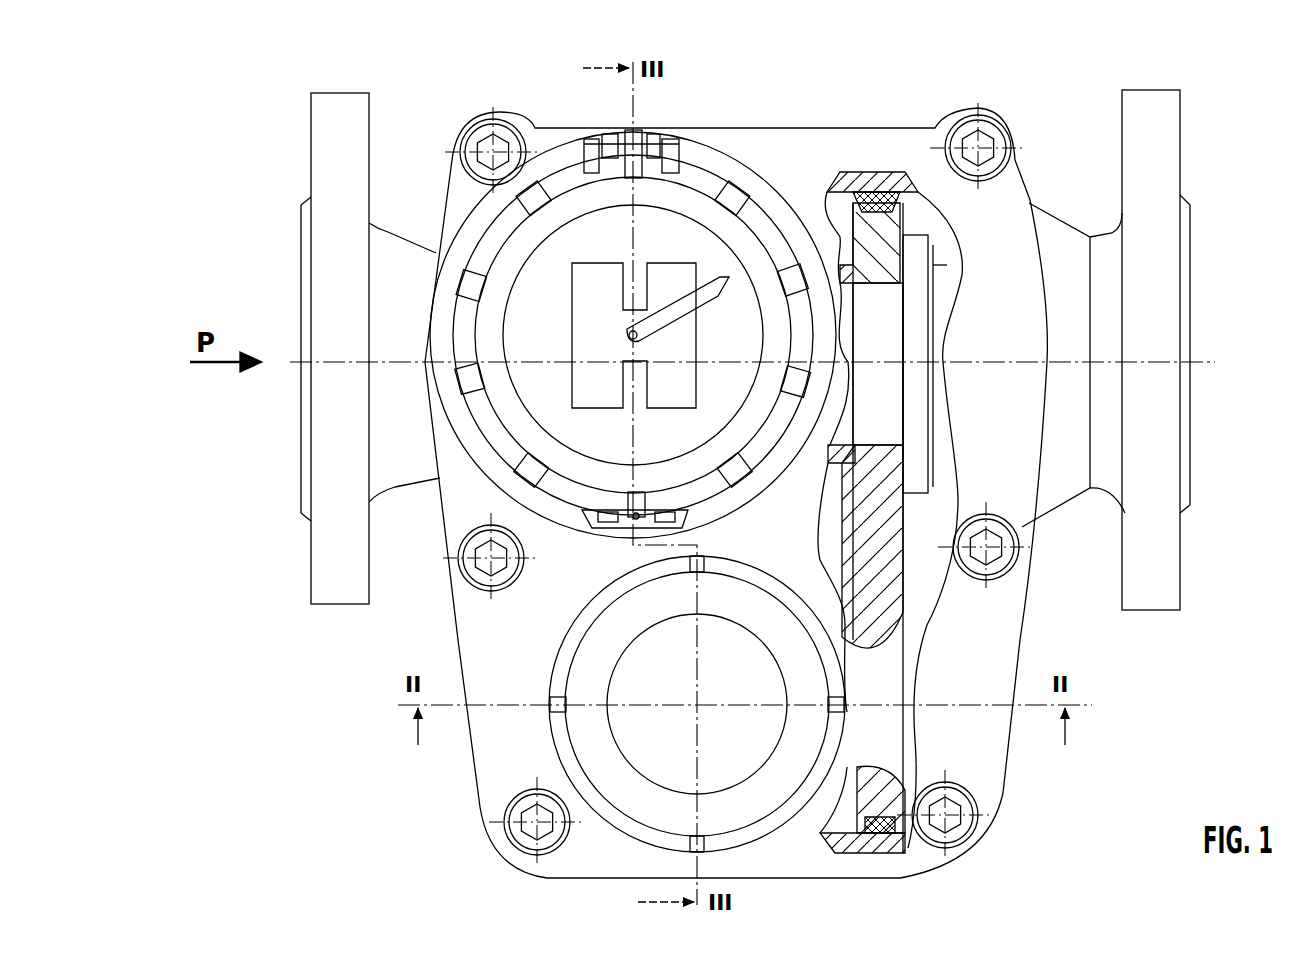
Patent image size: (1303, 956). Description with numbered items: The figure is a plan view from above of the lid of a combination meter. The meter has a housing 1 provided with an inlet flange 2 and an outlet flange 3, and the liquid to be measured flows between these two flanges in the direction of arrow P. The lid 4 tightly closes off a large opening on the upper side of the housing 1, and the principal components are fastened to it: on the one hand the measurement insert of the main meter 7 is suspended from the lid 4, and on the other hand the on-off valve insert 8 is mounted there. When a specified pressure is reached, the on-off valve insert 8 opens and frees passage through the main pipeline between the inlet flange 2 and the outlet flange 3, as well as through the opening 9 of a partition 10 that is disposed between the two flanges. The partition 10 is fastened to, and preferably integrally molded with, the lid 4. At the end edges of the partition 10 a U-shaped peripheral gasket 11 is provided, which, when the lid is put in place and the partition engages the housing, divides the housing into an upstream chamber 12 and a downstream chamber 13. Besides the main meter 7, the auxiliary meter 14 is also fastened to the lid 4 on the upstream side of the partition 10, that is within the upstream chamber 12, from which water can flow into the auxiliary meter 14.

The housing 1 is at (428, 500).
The inlet flange 2 is at (322, 578).
The outlet flange 3 is at (1170, 584).
The lid 4 is at (1002, 198).
The main meter 7 is at (678, 212).
The on-off valve insert 8 is at (913, 343).
The opening 9 is at (882, 305).
The partition 10 is at (895, 607).
The gasket 11 is at (870, 200).
The upstream chamber 12 is at (837, 188).
The downstream chamber 13 is at (913, 195).
The auxiliary meter 14 is at (640, 795).